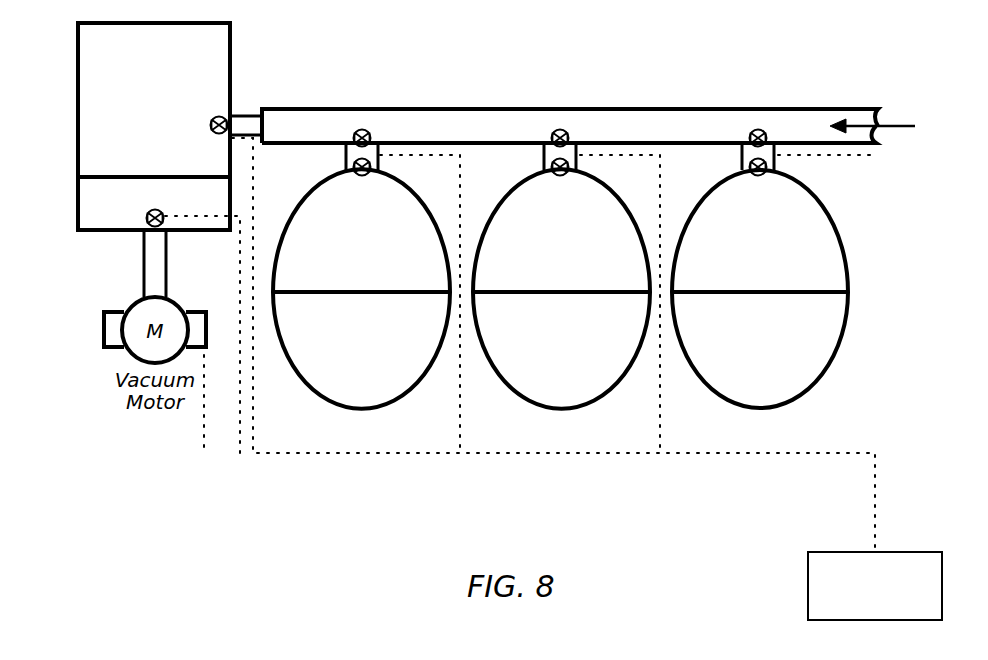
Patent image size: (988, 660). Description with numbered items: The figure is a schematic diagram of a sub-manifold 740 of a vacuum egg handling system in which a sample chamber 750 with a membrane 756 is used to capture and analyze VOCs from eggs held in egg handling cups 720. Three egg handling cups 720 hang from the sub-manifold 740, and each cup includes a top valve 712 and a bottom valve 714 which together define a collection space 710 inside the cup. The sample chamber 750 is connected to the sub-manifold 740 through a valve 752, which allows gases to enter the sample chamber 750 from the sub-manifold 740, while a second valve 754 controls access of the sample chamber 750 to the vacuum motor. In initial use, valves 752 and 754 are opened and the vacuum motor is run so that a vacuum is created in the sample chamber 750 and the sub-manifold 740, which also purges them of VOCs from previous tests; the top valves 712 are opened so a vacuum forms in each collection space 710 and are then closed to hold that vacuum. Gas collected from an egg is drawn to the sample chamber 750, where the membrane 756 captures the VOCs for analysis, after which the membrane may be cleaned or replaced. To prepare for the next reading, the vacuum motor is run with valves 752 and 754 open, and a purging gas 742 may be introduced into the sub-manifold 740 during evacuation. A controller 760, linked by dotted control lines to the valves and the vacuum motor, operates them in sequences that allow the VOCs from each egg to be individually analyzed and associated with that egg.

The collection space 710 is at (552, 166).
The top valve 712 is at (772, 142).
The bottom valve 714 is at (752, 166).
The egg handling cup 720 is at (836, 258).
The sub-manifold 740 is at (650, 109).
The purging gas 742 is at (900, 126).
The sample chamber 750 is at (154, 126).
The valve 752 is at (230, 116).
The valve 754 is at (148, 229).
The membrane 756 is at (78, 168).
The controller 760 is at (875, 586).